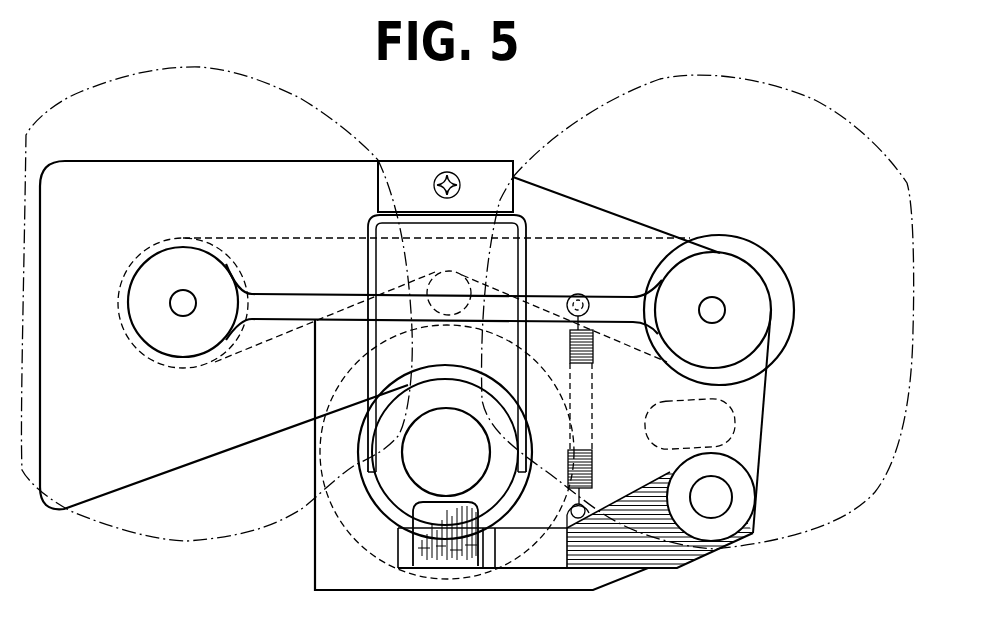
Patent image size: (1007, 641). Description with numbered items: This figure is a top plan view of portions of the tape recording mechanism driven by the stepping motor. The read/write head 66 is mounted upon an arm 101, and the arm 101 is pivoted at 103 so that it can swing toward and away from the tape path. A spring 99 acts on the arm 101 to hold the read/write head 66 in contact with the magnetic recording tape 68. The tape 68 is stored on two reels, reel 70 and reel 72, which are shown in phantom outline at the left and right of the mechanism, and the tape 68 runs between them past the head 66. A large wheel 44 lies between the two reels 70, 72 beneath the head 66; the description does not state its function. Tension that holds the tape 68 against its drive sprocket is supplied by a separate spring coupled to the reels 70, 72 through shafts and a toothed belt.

The reel 70 is at (304, 82).
The reel 72 is at (892, 112).
The spring 99 is at (585, 397).
The pivot 103 is at (722, 495).
The magnetic recording tape 68 is at (407, 410).
The flywheel 44 is at (397, 482).
The read/write head 66 is at (472, 557).
The arm 101 is at (650, 555).